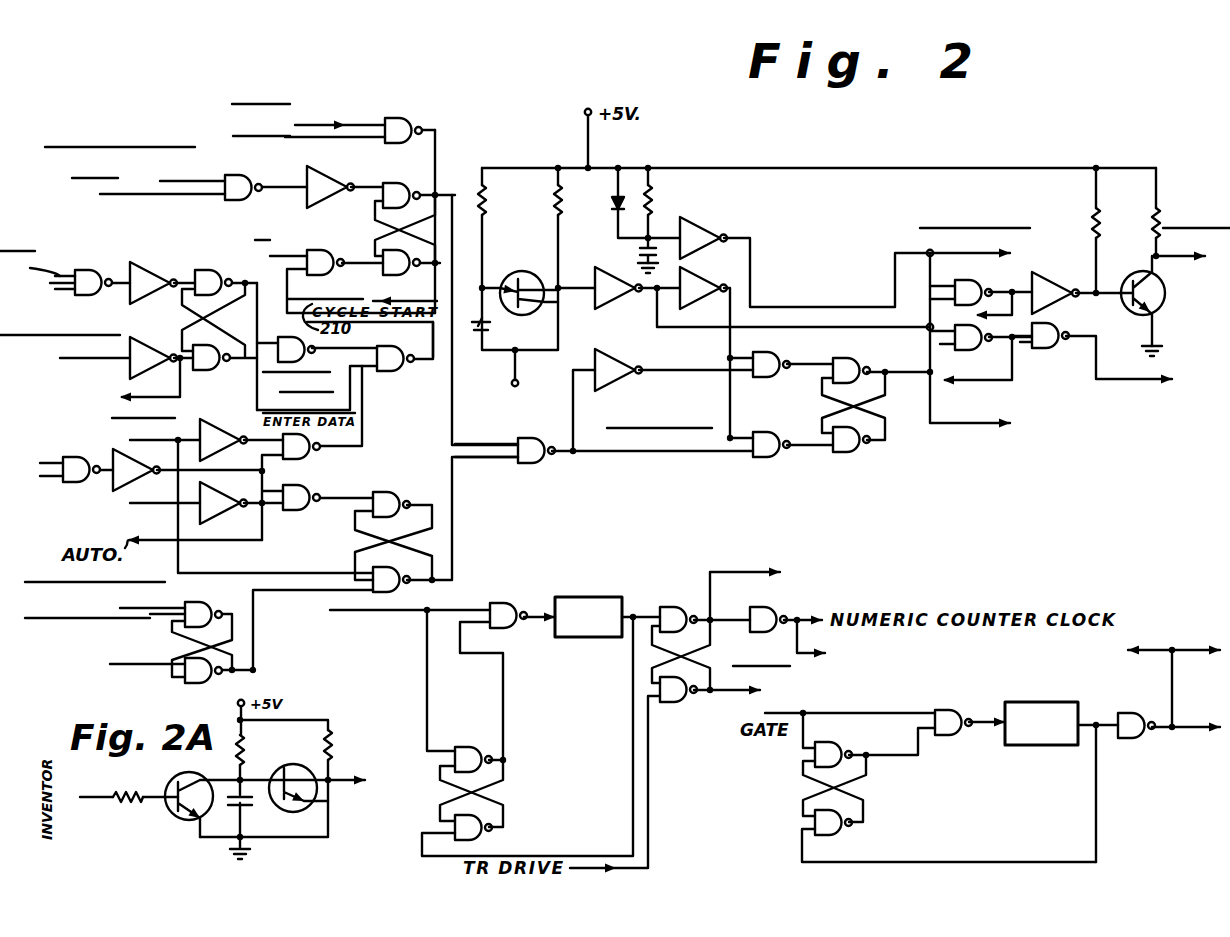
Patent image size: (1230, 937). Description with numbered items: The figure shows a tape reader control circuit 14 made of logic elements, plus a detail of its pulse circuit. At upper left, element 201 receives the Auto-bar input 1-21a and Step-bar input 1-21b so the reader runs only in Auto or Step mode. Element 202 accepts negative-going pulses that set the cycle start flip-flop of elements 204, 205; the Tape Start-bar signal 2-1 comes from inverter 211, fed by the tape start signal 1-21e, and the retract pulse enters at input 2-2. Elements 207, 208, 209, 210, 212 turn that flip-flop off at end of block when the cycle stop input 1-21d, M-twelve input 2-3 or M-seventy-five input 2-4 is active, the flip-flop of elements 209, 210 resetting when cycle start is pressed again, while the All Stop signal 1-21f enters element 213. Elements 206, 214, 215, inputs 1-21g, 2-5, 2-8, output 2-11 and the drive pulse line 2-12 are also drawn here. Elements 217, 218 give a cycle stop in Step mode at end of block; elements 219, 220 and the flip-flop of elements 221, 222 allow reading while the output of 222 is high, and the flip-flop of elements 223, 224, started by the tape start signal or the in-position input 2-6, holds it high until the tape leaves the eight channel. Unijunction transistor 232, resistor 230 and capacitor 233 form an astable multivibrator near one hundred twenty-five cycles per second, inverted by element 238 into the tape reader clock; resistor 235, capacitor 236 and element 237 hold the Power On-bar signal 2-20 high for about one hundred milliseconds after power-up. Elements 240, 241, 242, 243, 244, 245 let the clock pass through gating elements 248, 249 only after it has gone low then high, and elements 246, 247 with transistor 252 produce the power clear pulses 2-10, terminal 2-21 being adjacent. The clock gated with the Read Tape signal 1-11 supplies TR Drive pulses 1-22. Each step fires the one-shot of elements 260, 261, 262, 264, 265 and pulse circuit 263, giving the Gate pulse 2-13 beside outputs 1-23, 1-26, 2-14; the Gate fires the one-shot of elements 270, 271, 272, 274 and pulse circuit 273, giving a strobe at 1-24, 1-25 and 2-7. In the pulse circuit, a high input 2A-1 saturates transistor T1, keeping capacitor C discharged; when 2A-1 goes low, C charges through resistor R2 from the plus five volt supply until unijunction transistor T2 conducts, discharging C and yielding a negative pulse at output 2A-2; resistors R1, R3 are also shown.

In FIG. 2, the tape reader control circuit 14 is at (1060, 140).
In FIG. 2, the logic element 201 is at (392, 118).
In FIG. 2, the logic element 202 is at (247, 177).
In FIG. 2, the cycle start flip-flop element 204 is at (405, 183).
In FIG. 2, the cycle start flip-flop element 205 is at (411, 255).
In FIG. 2, the NAND gate 206 is at (300, 256).
In FIG. 2, the logic element 207 is at (82, 270).
In FIG. 2, the logic element 208 is at (148, 262).
In FIG. 2, the flip-flop element 209 is at (230, 272).
In FIG. 2, the flip-flop element 210 is at (200, 370).
In FIG. 2, the inverter 211 is at (160, 350).
In FIG. 2, the logic element 212 is at (290, 342).
In FIG. 2, the logic element 213 is at (408, 347).
In FIG. 2, the NAND gate 214 is at (76, 469).
In FIG. 2, the inverter 215 is at (198, 494).
In FIG. 2, the logic element 217 is at (240, 430).
In FIG. 2, the logic element 218 is at (318, 452).
In FIG. 2, the logic element 219 is at (206, 499).
In FIG. 2, the logic element 220 is at (308, 490).
In FIG. 2, the flip-flop element 221 is at (430, 481).
In FIG. 2, the flip-flop element 222 is at (412, 559).
In FIG. 2, the flip-flop element 223 is at (238, 603).
In FIG. 2, the flip-flop element 224 is at (200, 683).
In FIG. 2, the resistor 230 is at (485, 203).
In FIG. 2, the unijunction transistor 232 is at (532, 263).
In FIG. 2, the capacitor 233 is at (490, 327).
In FIG. 2, the resistor 235 is at (650, 202).
In FIG. 2, the capacitor 236 is at (640, 250).
In FIG. 2, the logic element 237 is at (738, 214).
In FIG. 2, the inverter element 238 is at (620, 306).
In FIG. 2, the logic element 240 is at (525, 464).
In FIG. 2, the logic element 241 is at (622, 383).
In FIG. 2, the logic element 242 is at (768, 377).
In FIG. 2, the logic element 243 is at (758, 458).
In FIG. 2, the logic element 244 is at (860, 364).
In FIG. 2, the logic element 245 is at (848, 453).
In FIG. 2, the logic element 246 is at (963, 306).
In FIG. 2, the logic element 247 is at (1075, 270).
In FIG. 2, the gating element 248 is at (968, 349).
In FIG. 2, the gating element 249 is at (1044, 349).
In FIG. 2, the transistor 252 is at (1157, 305).
In FIG. 2, the one-shot element 260 is at (478, 731).
In FIG. 2, the one-shot element 261 is at (485, 838).
In FIG. 2, the one-shot element 262 is at (496, 608).
In FIG. 2, the pulse circuit 263 is at (602, 586).
In FIG. 2, the flip-flop element 264 is at (690, 593).
In FIG. 2, the flip-flop element 265 is at (674, 703).
In FIG. 2, the one-shot element 270 is at (830, 744).
In FIG. 2, the one-shot element 271 is at (835, 838).
In FIG. 2, the one-shot element 272 is at (966, 690).
In FIG. 2, the pulse circuit 273 is at (1056, 686).
In FIG. 2, the one-shot element 274 is at (1128, 740).
In FIG. 2, the Read Tape signal 1-11 is at (968, 424).
In FIG. 2, the Auto-bar input 1-21a is at (343, 130).
In FIG. 2, the Step-bar input 1-21b is at (352, 140).
In FIG. 2, the cycle stop input 1-21d is at (70, 276).
In FIG. 2, the tape start signal 1-21e is at (95, 358).
In FIG. 2, the All Stop signal 1-21f is at (340, 368).
In FIG. 2, the input line 1-21g is at (348, 392).
In FIG. 2, the TR Drive output 1-22 is at (1132, 364).
In FIG. 2, the numeric counter clock output 1-23 is at (803, 620).
In FIG. 2, the strobe signal output 1-24 is at (1180, 648).
In FIG. 2, the strobe signal output 1-25 is at (1178, 729).
In FIG. 2, the output line 1-26 is at (805, 655).
In FIG. 2, the Tape Start-bar signal 2-1 is at (198, 181).
In FIG. 2, the R_p-bar input 2-2 is at (163, 195).
In FIG. 2, the M12 input 2-3 is at (60, 283).
In FIG. 2, the M75 input 2-4 is at (62, 289).
In FIG. 2, the line 2-5 is at (145, 397).
In FIG. 2, the in-position signal input 2-6 is at (191, 592).
In FIG. 2, the strobe pulse output 2-7 is at (50, 476).
In FIG. 2, the line 2-8 is at (270, 660).
In FIG. 2, the power clear output 2-10 is at (1172, 256).
In FIG. 2, the cycle start output 2-11 is at (405, 293).
In FIG. 2, the tape reader drive pulse line 2-12 is at (430, 608).
In FIG. 2, the Gate pulse output 2-13 is at (738, 572).
In FIG. 2, the gate-bar output 2-14 is at (738, 690).
In FIG. 2, the Power On-bar signal 2-20 is at (1012, 255).
In FIG. 2, the input line 2-21 is at (1000, 308).
In FIG. 2, the pulse circuit input 2A-1 is at (976, 727).
In FIG. 2A, the pulse circuit input 2A-1 is at (92, 800).
In FIG. 2, the pulse circuit output 2A-2 is at (1084, 745).
In FIG. 2A, the pulse circuit output 2A-2 is at (352, 786).
In FIG. 2A, the resistor R1 is at (144, 795).
In FIG. 2A, the resistor R2 is at (259, 748).
In FIG. 2A, the resistor R3 is at (332, 740).
In FIG. 2A, the capacitor C is at (244, 806).
In FIG. 2A, the transistor T1 is at (202, 782).
In FIG. 2A, the unijunction transistor T2 is at (304, 780).